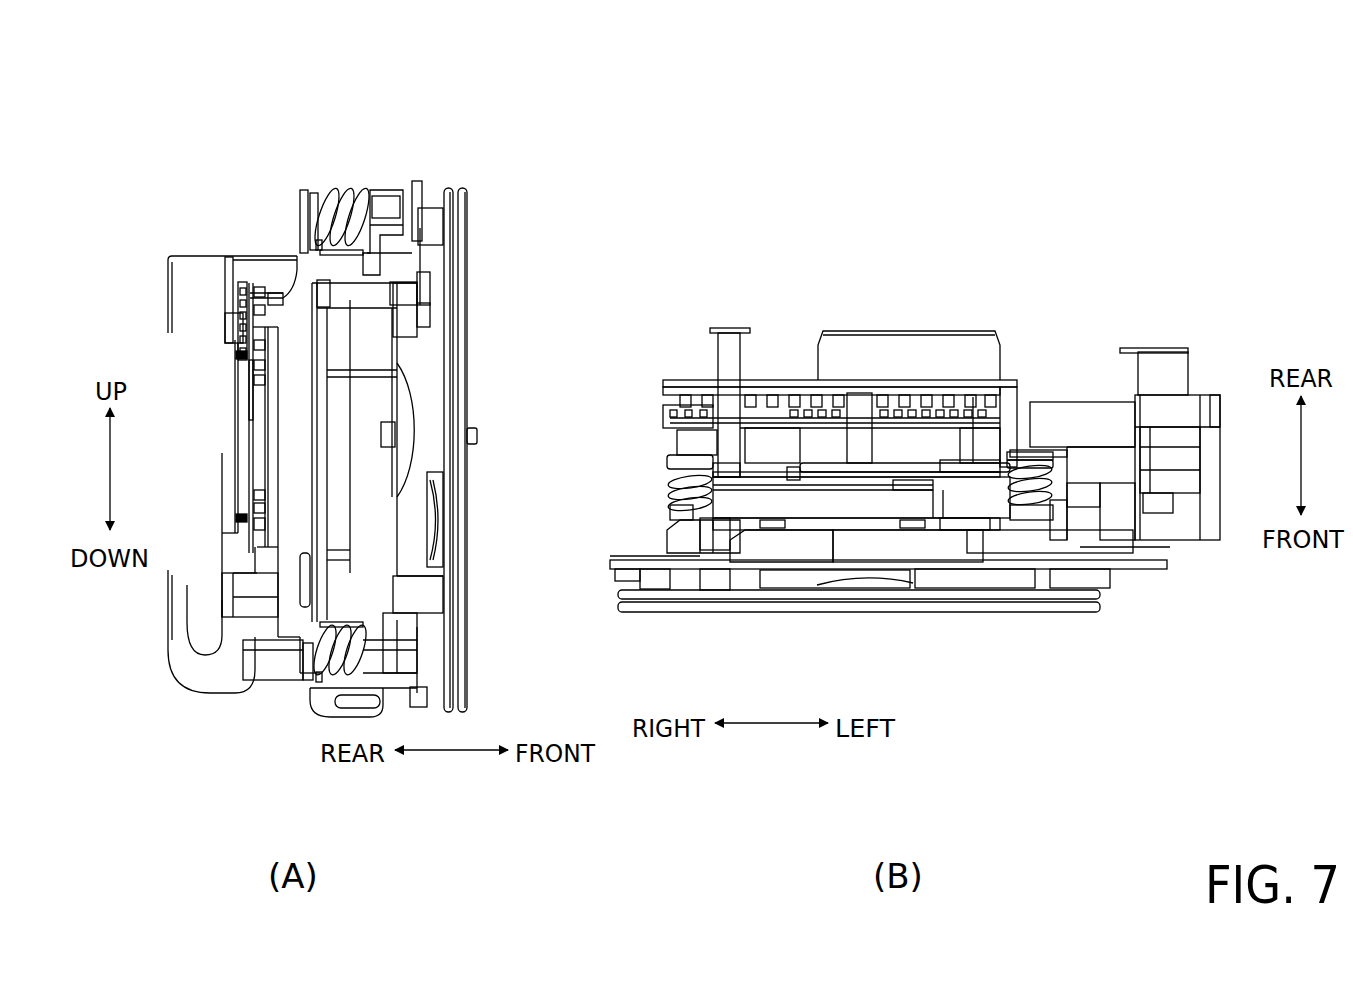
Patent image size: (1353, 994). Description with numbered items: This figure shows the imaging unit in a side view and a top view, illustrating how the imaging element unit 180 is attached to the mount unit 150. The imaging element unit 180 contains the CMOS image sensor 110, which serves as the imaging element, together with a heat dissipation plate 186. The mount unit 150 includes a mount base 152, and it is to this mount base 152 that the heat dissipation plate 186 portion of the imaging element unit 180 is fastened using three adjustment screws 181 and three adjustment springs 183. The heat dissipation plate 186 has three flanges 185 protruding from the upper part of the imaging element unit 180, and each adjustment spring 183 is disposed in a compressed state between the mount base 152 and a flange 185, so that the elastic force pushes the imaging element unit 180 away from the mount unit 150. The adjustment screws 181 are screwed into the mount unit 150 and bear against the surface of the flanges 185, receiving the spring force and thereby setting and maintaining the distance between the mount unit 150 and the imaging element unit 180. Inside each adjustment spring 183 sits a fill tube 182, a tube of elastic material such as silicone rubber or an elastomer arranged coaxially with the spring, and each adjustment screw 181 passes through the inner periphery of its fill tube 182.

The CMOS image sensor 110 is at (250, 383).
The mount unit 150 is at (478, 197).
The mount base 152 is at (385, 188).
The imaging element unit 180 is at (222, 270).
The adjustment screw 181 is at (298, 207).
The fill tube 182 is at (323, 195).
The adjustment spring 183 is at (343, 186).
The flange 185 is at (313, 197).
The heat dissipation plate 186 is at (286, 298).